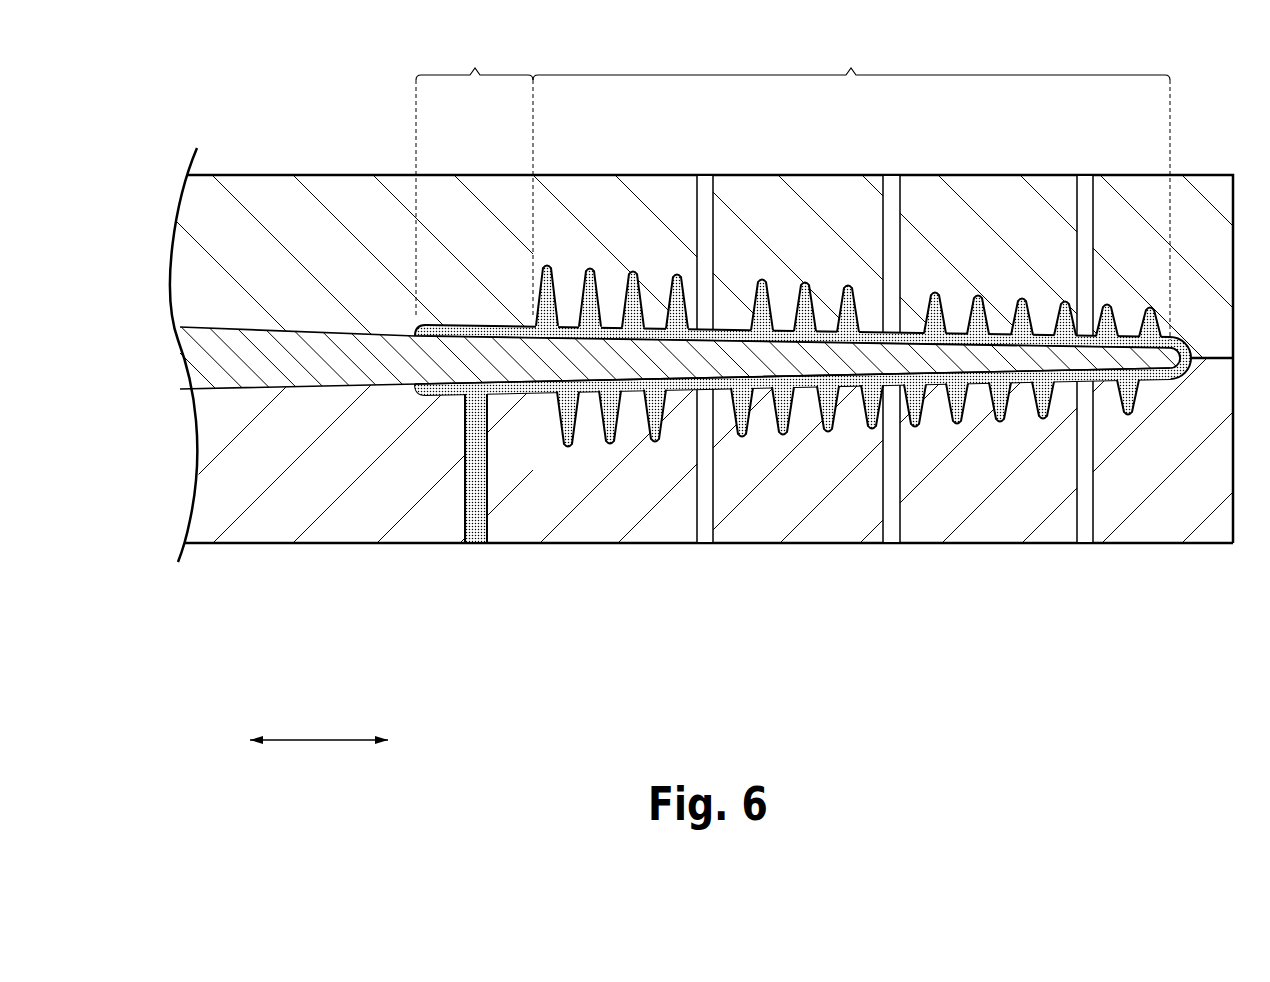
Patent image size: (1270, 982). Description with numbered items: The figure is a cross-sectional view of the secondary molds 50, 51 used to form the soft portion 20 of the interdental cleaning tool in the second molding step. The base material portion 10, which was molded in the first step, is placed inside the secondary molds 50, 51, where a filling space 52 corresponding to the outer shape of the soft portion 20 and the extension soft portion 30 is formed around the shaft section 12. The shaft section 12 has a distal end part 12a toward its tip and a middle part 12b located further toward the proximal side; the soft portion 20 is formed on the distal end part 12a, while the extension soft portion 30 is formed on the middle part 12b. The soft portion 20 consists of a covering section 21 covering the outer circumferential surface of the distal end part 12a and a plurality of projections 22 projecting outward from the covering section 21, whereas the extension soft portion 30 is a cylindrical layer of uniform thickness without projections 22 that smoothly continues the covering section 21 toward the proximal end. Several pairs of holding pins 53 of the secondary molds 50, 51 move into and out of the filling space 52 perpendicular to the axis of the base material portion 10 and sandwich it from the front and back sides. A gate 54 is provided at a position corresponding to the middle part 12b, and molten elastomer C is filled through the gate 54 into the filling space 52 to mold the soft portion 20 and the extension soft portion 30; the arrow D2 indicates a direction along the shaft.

The base material portion 10 is at (293, 389).
The shaft section 12 is at (682, 386).
The distal end part 12a is at (851, 190).
The middle part 12b is at (474, 179).
The soft portion 20 is at (630, 397).
The covering section 21 is at (800, 386).
The projections 22 is at (783, 437).
The extension soft portion 30 is at (775, 430).
The secondary mold 50 is at (975, 175).
The secondary mold 51 is at (983, 546).
The filling space 52 is at (592, 398).
The holding pins 53 is at (706, 177).
The gate 54 is at (462, 400).
The molten elastomer C is at (510, 400).
The second direction D2 is at (319, 756).